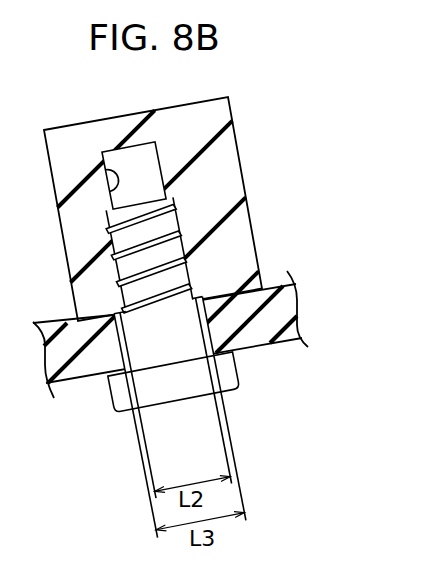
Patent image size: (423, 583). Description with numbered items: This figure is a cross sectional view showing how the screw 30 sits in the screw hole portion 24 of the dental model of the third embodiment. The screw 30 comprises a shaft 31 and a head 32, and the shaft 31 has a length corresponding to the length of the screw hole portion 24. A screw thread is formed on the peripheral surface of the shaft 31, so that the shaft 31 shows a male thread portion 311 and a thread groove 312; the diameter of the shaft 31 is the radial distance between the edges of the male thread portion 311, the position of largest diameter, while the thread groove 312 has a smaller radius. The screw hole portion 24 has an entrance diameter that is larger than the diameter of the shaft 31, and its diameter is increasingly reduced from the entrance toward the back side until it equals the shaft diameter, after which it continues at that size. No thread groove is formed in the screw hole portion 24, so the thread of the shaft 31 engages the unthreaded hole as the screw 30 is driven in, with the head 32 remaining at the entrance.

The screw hole portion 24 is at (100, 203).
The screw 30 is at (220, 327).
The shaft 31 is at (214, 226).
The male thread portion 311 is at (174, 204).
The thread groove 312 is at (178, 224).
The head 32 is at (180, 385).